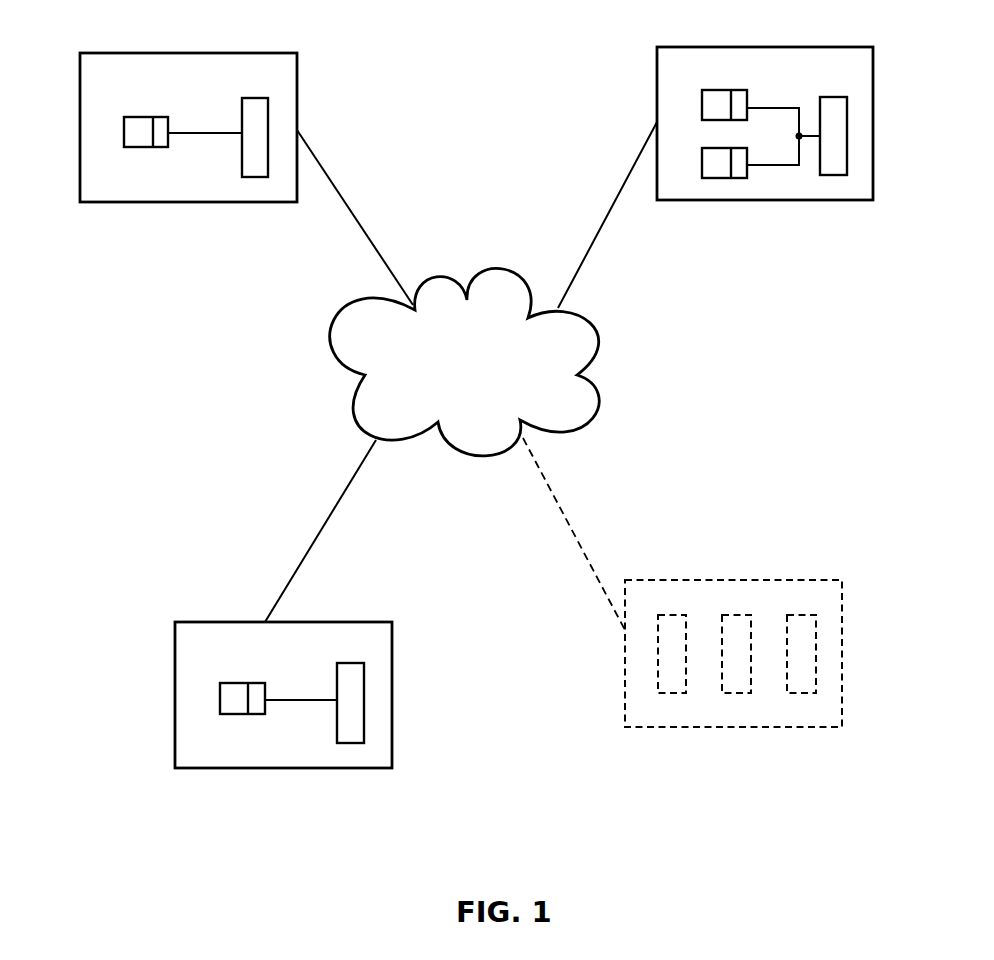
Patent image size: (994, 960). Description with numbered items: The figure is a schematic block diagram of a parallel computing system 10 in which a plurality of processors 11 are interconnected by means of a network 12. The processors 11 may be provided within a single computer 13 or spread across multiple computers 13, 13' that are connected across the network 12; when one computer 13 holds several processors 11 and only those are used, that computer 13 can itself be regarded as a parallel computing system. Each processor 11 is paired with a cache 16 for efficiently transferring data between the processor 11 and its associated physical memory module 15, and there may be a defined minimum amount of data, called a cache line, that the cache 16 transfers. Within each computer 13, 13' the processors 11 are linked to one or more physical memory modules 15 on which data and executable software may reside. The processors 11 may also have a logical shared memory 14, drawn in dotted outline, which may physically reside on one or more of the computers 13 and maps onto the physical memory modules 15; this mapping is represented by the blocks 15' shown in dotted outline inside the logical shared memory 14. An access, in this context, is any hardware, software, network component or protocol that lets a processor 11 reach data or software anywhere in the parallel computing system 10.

The parallel computing system 10 is at (805, 347).
The processor 11 is at (138, 147).
The network 12 is at (502, 267).
The computer 13 is at (783, 111).
The computer 13' is at (218, 395).
The logical shared memory 14 is at (770, 580).
The physical memory module 15 is at (507, 402).
The mapping block 15' is at (744, 695).
The cache 16 is at (153, 117).